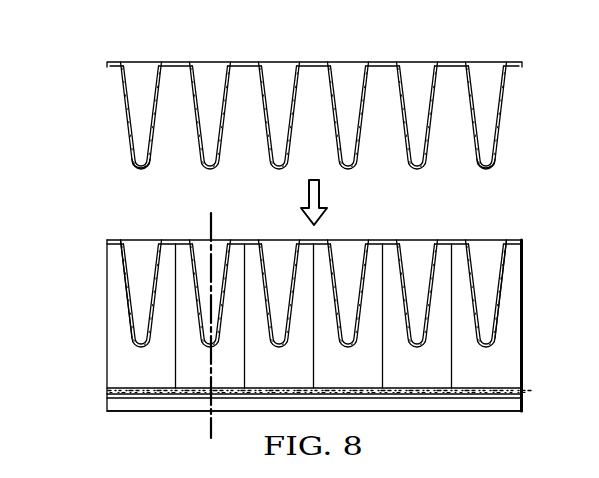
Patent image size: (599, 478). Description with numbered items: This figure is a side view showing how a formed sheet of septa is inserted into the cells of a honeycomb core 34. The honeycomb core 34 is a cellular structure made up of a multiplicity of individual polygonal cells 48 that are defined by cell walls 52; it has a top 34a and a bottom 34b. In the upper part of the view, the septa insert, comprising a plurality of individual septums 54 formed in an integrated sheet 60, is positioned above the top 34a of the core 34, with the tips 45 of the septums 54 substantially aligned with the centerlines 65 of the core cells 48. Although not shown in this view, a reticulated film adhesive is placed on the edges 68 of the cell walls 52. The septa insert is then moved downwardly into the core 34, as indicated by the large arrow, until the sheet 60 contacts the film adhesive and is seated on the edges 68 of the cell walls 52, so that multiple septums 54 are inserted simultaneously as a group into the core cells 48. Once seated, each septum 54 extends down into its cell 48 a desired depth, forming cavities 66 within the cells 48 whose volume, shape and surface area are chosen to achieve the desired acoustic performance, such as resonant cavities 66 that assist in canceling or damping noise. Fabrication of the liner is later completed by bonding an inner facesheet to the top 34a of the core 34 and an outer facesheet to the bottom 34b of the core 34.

The honeycomb core 34 is at (291, 325).
The top of the honeycomb core 34a is at (350, 236).
The bottom of the honeycomb core 34b is at (436, 414).
The tips 45 is at (140, 168).
The cells 48 is at (128, 361).
The cell walls 52 is at (451, 357).
The septums 54 is at (122, 292).
The sheet 60 is at (453, 62).
The centerlines 65 is at (213, 221).
The cavities 66 is at (487, 291).
The edges of the cell walls 68 is at (171, 238).